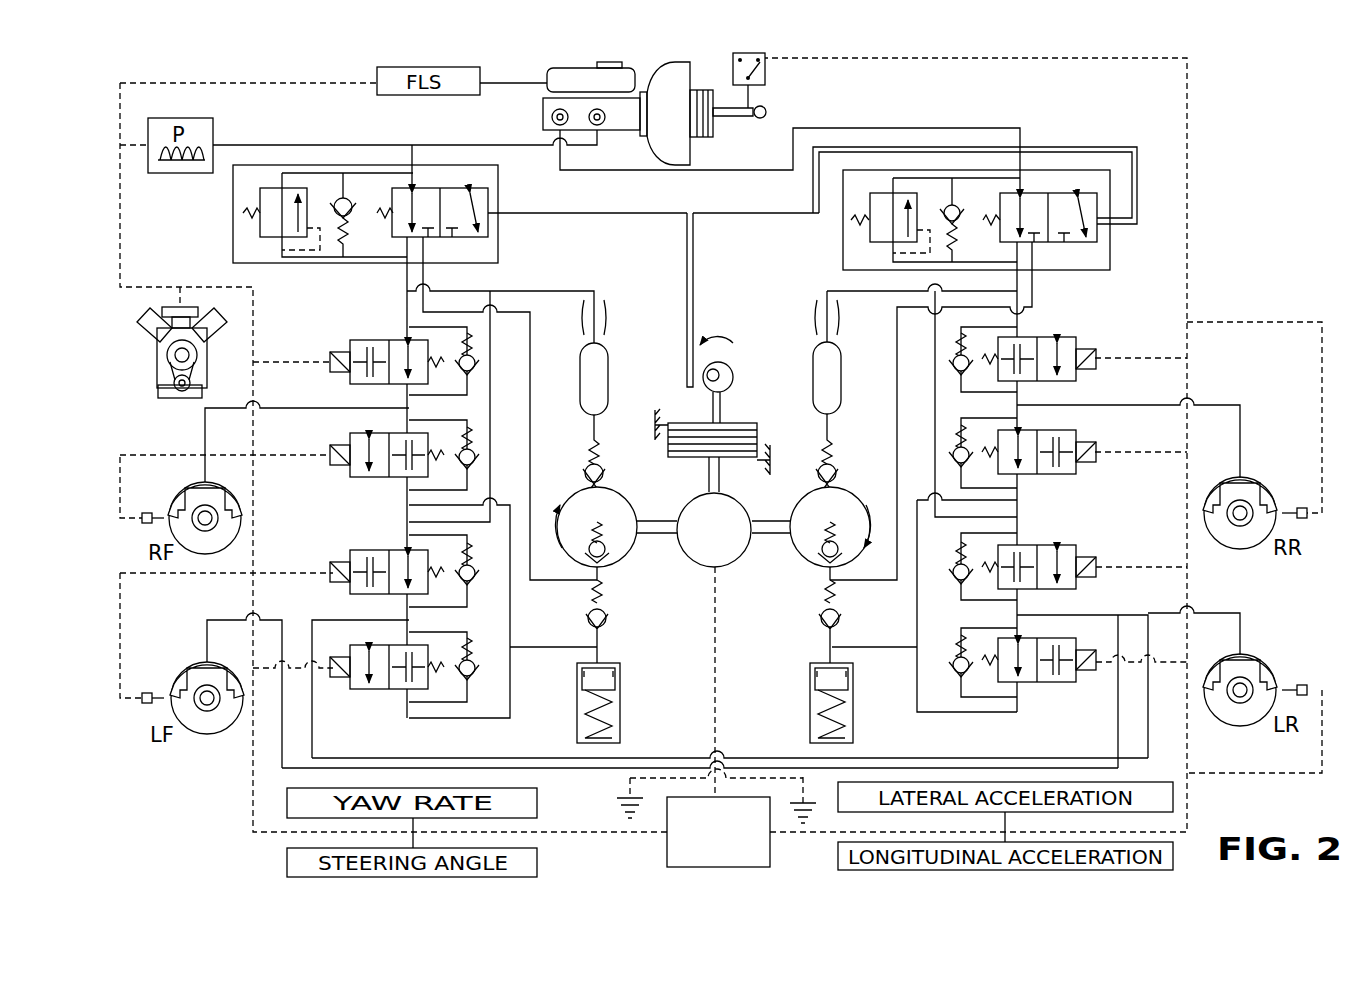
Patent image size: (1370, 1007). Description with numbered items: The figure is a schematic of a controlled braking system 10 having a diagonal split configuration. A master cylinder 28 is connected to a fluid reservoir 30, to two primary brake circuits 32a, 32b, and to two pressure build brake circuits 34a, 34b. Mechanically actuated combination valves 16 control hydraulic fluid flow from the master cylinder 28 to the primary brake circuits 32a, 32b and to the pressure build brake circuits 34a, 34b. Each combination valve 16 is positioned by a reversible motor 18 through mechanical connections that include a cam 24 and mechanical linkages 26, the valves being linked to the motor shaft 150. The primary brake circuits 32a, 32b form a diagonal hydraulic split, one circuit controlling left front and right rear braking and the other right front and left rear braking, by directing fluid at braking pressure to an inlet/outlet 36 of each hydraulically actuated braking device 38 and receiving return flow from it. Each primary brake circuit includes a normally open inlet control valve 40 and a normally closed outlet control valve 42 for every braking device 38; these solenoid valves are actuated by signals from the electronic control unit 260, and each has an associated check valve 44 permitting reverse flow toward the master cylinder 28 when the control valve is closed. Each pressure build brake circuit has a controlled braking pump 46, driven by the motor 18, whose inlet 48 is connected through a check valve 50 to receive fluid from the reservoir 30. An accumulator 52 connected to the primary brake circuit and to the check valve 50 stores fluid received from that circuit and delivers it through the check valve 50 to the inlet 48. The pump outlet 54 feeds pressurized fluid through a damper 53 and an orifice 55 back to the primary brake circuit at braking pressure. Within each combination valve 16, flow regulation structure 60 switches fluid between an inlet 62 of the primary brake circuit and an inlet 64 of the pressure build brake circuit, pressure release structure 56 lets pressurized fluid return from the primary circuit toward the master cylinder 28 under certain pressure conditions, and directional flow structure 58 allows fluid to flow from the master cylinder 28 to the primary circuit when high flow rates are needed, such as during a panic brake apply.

The controlled braking system 10 is at (1224, 118).
The mechanically actuated combination valve 16 is at (300, 170).
The reversible motor 18 is at (700, 562).
The cam 24 is at (730, 368).
The mechanical linkages 26 is at (687, 283).
The master cylinder 28 is at (615, 123).
The fluid reservoir 30 is at (547, 90).
The primary brake circuit 32a is at (1032, 330).
The primary brake circuit 32b is at (402, 283).
The pressure build brake circuit 34a is at (893, 388).
The pressure build brake circuit 34b is at (538, 392).
The inlet/outlet 36 is at (203, 470).
The hydraulically actuated braking device 38 is at (218, 545).
The normally open inlet control valve 40 is at (385, 340).
The normally closed outlet control valve 42 is at (385, 477).
The check valve 44 is at (952, 357).
The controlled braking pump 46 is at (808, 550).
The inlet 48 is at (830, 578).
The check valve 50 is at (840, 612).
The accumulator 52 is at (853, 718).
The damper 53 is at (815, 345).
The outlet 54 is at (832, 432).
The orifice 55 is at (808, 325).
The pressure release structure 56 is at (887, 193).
The directional flow structure 58 is at (957, 205).
The flow regulation structure 60 is at (1100, 200).
The inlet 62 is at (1034, 262).
The inlet 64 is at (1097, 232).
The motor shaft 150 is at (705, 470).
The electronic control unit 260 is at (667, 850).